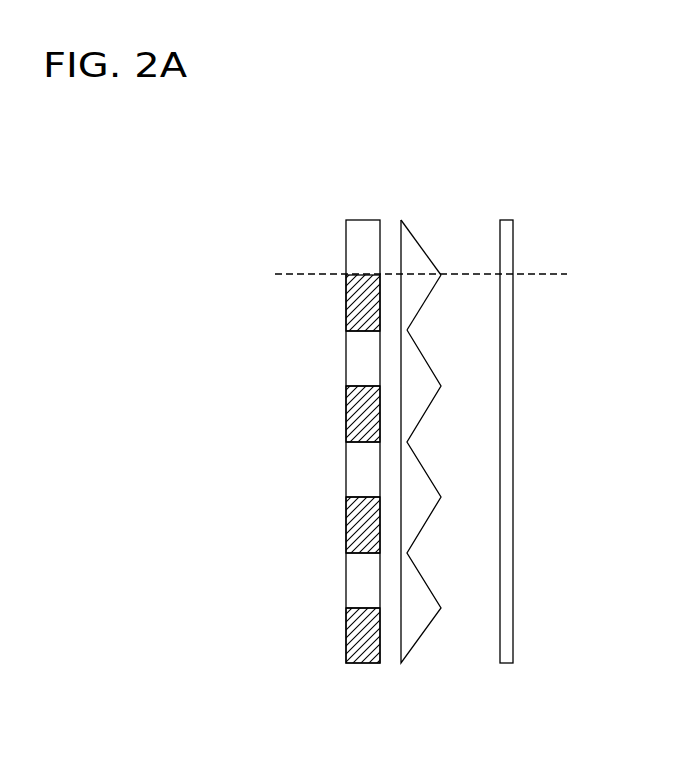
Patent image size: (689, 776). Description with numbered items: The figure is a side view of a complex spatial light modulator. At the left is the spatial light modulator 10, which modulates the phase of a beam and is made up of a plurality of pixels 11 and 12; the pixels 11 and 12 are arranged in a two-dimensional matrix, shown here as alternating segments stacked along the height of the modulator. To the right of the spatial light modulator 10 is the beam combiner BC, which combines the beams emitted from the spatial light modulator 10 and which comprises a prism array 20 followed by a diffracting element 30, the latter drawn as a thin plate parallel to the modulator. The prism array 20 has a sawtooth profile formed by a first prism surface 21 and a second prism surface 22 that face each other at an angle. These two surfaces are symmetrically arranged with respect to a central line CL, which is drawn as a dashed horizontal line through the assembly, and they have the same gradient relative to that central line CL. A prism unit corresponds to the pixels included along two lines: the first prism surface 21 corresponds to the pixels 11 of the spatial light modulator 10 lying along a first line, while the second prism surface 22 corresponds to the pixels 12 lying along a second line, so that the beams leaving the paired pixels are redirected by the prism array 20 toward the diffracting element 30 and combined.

The spatial light modulator 10 is at (360, 218).
The pixel 11 is at (358, 253).
The pixel 12 is at (357, 308).
The prism array 20 is at (401, 218).
The first prism surface 21 is at (427, 247).
The second prism surface 22 is at (429, 300).
The diffracting element 30 is at (507, 220).
The beam combiner BC is at (518, 153).
The central line CL is at (545, 273).